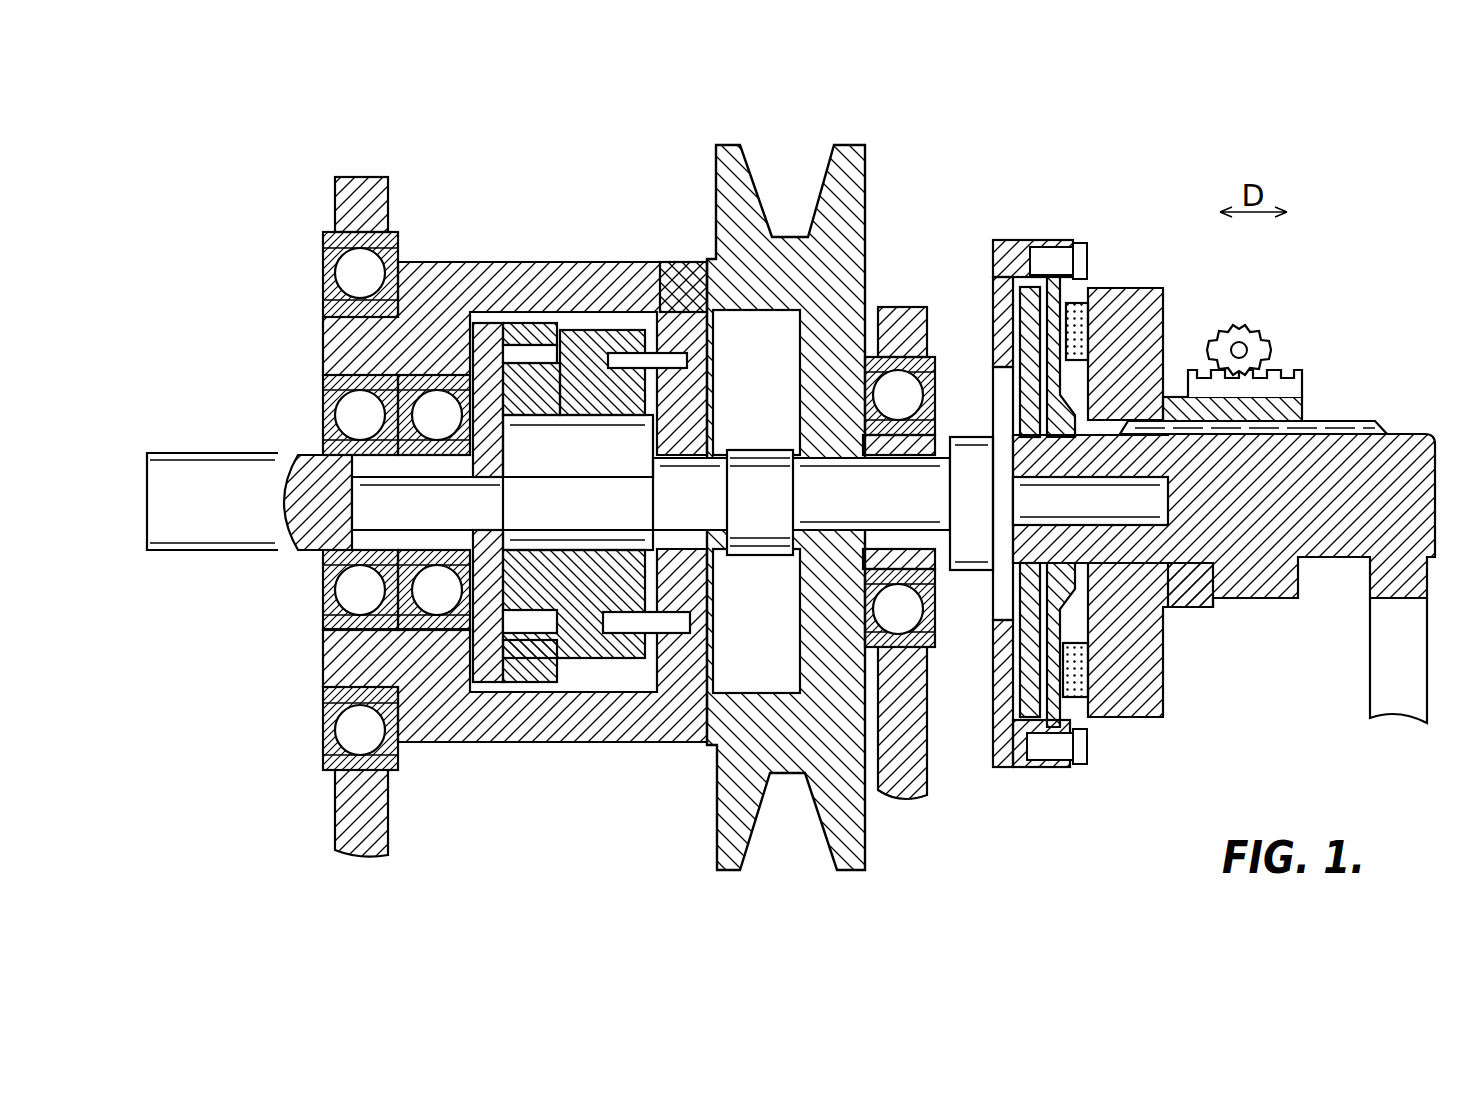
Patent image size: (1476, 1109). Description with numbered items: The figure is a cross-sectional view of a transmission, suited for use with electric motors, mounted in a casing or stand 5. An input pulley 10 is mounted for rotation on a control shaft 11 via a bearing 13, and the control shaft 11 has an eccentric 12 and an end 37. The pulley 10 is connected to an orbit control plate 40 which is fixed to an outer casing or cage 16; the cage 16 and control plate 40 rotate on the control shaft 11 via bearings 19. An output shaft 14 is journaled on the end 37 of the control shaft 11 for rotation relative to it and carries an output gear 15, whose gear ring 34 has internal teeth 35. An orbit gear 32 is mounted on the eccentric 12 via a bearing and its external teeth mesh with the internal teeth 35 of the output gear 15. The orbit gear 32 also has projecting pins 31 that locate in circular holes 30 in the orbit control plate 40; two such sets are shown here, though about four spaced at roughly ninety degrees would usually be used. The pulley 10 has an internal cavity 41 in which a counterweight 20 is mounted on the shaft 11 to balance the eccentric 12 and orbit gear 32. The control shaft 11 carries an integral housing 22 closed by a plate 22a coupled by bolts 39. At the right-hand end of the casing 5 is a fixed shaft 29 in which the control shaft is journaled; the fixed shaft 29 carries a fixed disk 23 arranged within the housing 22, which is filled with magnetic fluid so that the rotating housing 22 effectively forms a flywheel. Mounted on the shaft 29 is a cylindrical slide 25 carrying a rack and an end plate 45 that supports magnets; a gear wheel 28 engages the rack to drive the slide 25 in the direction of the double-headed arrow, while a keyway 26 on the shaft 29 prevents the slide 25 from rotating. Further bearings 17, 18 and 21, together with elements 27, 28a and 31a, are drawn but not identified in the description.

The casing or stand 5 is at (350, 803).
The input pulley 10 is at (862, 175).
The control shaft 11 is at (835, 490).
The eccentric 12 is at (558, 460).
The bearing 13 is at (835, 530).
The output shaft 14 is at (212, 470).
The output gear 15 is at (490, 627).
The outer casing or cage 16 is at (437, 705).
The bearing 17 is at (330, 712).
The bearing 18 is at (323, 560).
The bearings 19 is at (693, 460).
The counterweight 20 is at (752, 650).
The bearing 21 is at (900, 385).
The housing 22 is at (1005, 760).
The plate 22a is at (1053, 760).
The fixed disk 23 is at (1030, 318).
The cylindrical slide 25 is at (1240, 600).
The keyway 26 is at (1317, 428).
The flange 27 is at (1300, 390).
The gear wheel 28 is at (1248, 322).
The rack 28a is at (1283, 345).
The fixed shaft 29 is at (1335, 517).
The circular holes 30 is at (1075, 335).
The projecting pins 31 is at (680, 640).
The slot 31a is at (618, 353).
The orbit gear 32 is at (580, 580).
The gear ring 34 is at (513, 335).
The internal teeth 35 is at (500, 387).
The end of control shaft 37 is at (330, 463).
The bolts 39 is at (1085, 760).
The orbit control plate 40 is at (680, 270).
The internal cavity 41 is at (755, 330).
The end plate 45 is at (1148, 328).